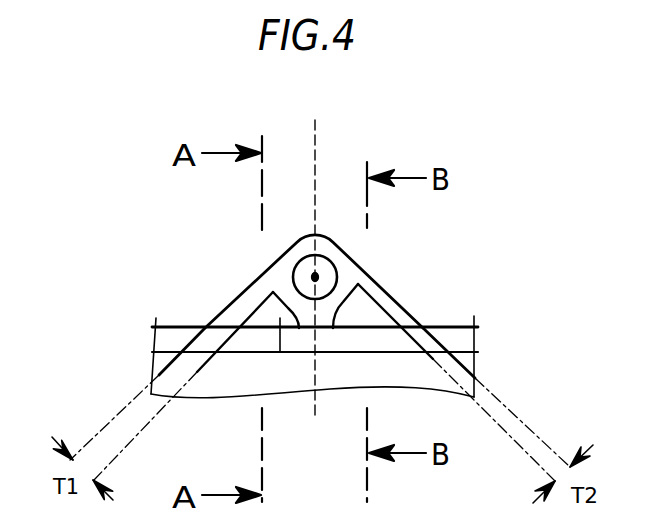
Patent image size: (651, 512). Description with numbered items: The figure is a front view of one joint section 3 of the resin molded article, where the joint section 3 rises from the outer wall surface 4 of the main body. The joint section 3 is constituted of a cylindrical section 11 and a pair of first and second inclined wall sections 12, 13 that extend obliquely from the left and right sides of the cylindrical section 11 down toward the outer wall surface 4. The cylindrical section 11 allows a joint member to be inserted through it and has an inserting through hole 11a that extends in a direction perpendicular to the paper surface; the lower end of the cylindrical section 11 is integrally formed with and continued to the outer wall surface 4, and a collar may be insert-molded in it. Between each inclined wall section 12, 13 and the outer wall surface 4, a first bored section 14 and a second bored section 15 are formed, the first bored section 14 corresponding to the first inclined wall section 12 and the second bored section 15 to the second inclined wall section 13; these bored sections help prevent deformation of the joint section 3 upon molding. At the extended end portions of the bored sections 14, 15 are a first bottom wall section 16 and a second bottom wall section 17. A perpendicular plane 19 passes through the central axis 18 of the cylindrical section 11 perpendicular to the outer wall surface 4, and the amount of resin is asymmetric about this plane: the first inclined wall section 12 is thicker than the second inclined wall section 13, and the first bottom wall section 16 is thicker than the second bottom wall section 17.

The joint section 3 is at (320, 344).
The outer wall surface 4 is at (464, 337).
The cylindrical section 11 is at (303, 243).
The inserting through hole 11a is at (293, 278).
The first inclined wall section 12 is at (241, 307).
The second inclined wall section 13 is at (412, 314).
The first bored section 14 is at (260, 318).
The second bored section 15 is at (370, 307).
The first bottom wall section 16 is at (279, 318).
The second bottom wall section 17 is at (353, 318).
The central axis 18 is at (311, 278).
The perpendicular plane 19 is at (317, 130).